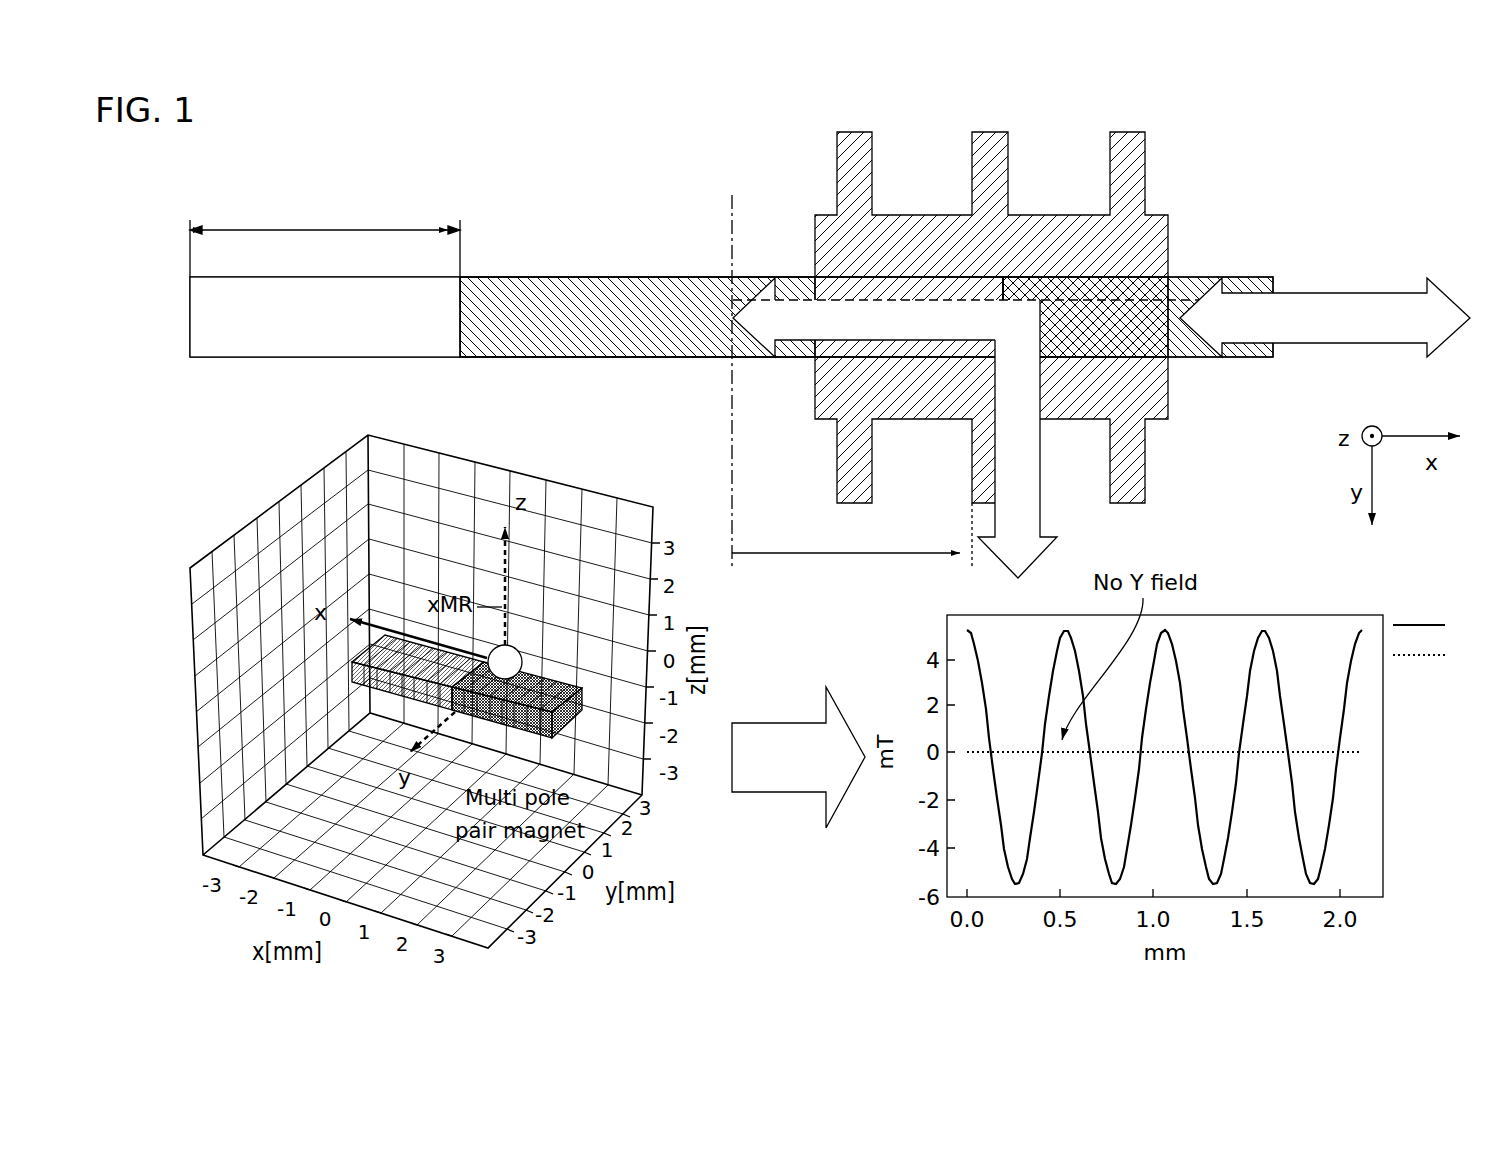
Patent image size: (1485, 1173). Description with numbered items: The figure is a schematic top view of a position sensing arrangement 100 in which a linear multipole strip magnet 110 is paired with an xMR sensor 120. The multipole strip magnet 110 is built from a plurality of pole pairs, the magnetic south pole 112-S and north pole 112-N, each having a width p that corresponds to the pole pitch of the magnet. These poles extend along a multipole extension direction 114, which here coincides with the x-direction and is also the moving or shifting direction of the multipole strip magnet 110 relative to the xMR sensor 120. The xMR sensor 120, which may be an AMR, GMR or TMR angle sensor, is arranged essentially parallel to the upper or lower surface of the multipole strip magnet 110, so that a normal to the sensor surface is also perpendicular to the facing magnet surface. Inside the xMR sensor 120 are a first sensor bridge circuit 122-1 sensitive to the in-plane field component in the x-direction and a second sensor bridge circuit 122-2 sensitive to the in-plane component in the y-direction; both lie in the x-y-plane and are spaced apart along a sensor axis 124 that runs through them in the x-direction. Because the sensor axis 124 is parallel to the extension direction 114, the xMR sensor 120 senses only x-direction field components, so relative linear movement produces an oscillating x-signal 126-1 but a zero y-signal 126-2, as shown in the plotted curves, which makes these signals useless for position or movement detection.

The position sensing arrangement 100 is at (830, 335).
The multipole strip magnet 110 is at (731, 301).
The magnetic south pole 112-S is at (320, 358).
The magnetic north pole 112-N is at (597, 358).
The multipole extension direction 114 is at (1368, 288).
The xMR sensor 120 is at (1052, 158).
The first sensor bridge circuit 122-1 is at (922, 253).
The second sensor bridge circuit 122-2 is at (1088, 253).
The sensor axis 124 is at (1235, 300).
The x-signal 126-1 is at (1272, 640).
The y-signal 126-2 is at (1308, 752).